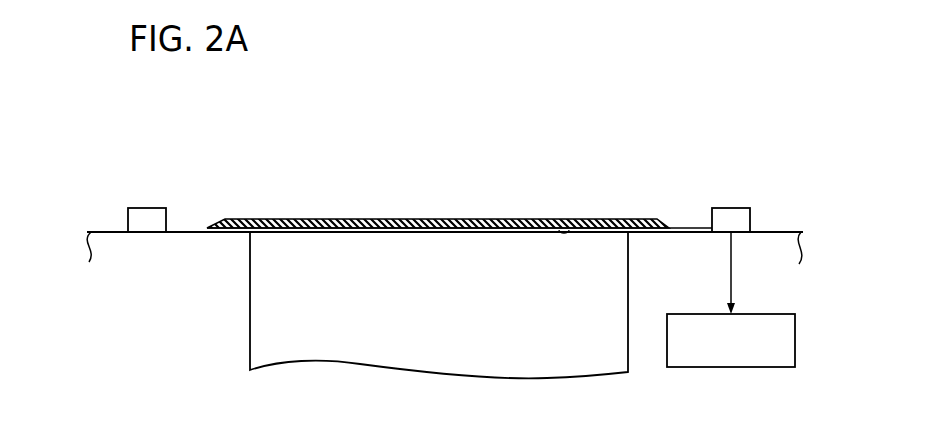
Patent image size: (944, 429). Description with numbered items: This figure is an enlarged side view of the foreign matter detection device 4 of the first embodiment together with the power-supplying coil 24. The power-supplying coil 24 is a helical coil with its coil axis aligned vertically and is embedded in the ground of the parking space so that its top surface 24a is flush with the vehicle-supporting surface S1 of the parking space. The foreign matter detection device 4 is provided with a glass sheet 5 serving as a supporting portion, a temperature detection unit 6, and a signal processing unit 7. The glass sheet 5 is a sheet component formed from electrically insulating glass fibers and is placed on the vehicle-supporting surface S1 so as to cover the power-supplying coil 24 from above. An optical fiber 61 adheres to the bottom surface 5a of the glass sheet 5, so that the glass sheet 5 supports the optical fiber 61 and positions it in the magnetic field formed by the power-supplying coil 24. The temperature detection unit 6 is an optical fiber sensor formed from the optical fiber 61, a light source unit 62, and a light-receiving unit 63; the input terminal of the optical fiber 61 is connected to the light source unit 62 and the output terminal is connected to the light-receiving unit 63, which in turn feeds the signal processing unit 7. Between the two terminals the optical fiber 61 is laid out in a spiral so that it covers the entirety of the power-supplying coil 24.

The foreign matter detection device 4 is at (686, 108).
The glass sheet 5 is at (489, 218).
The bottom surface 5a is at (567, 230).
The temperature detection unit 6 is at (790, 208).
The signal processing unit 7 is at (795, 348).
The power-supplying coil 24 is at (607, 273).
The top surface 24a is at (413, 227).
The optical fiber 61 is at (306, 230).
The light source unit 62 is at (147, 218).
The light-receiving unit 63 is at (726, 218).
The vehicle-supporting surface S1 is at (118, 232).